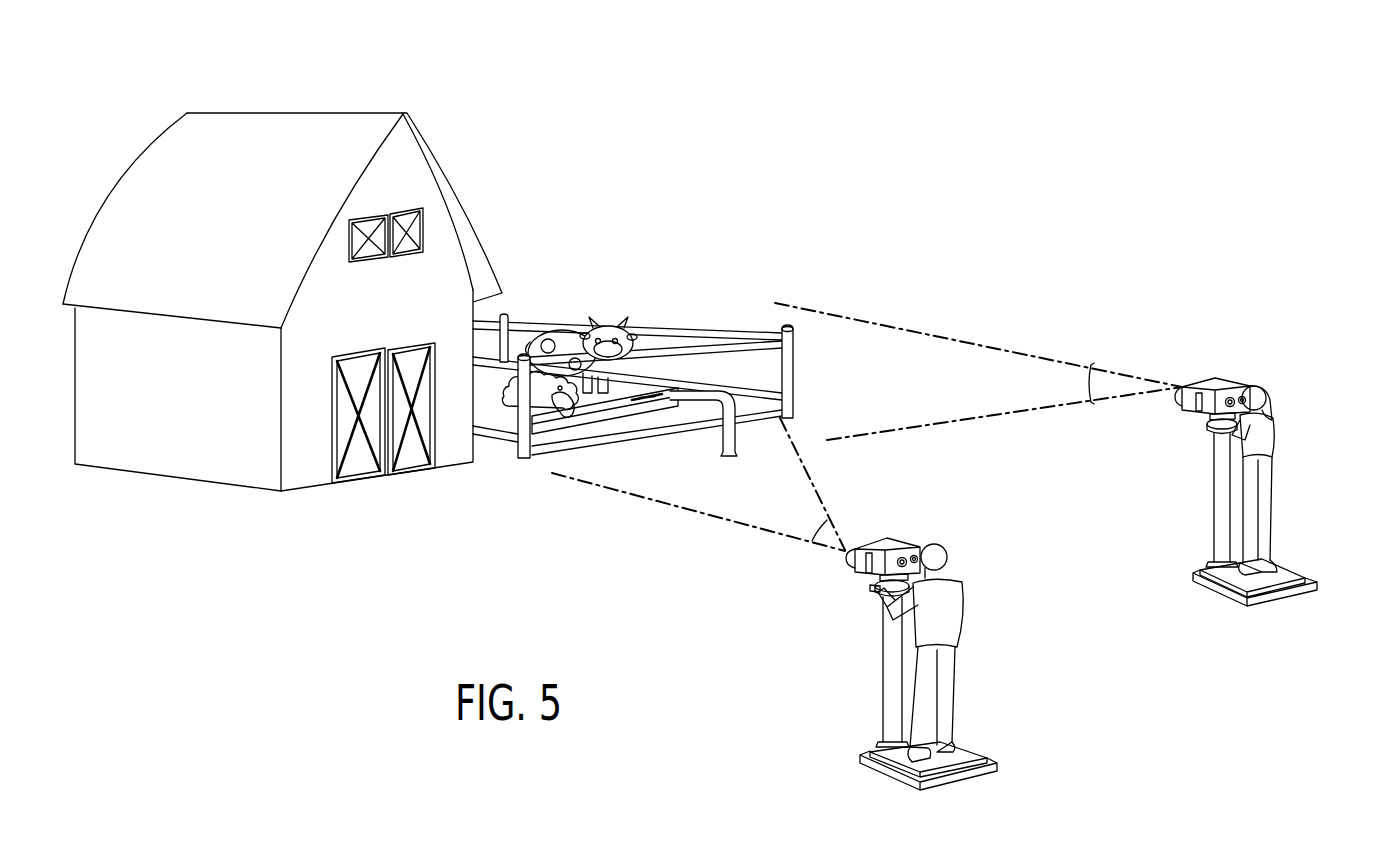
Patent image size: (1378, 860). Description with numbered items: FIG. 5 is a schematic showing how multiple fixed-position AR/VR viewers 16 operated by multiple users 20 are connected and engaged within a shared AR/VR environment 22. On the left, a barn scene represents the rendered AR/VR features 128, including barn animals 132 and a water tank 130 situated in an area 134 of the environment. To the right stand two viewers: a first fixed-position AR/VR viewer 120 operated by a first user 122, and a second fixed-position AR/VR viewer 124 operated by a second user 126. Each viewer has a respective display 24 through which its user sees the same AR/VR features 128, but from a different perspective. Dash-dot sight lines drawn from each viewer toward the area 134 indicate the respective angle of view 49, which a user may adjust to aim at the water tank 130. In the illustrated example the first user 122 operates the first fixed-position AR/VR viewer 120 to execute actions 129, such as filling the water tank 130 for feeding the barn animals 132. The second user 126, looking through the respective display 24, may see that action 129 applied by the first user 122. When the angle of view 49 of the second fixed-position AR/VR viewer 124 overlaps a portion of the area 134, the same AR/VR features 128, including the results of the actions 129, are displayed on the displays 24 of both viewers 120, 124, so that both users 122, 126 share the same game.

The AR/VR environment 22 is at (112, 98).
The AR/VR features 128 is at (633, 332).
The barn animals 132 is at (600, 303).
The area 134 is at (709, 306).
The water tank 130 is at (578, 444).
The actions 129 is at (718, 434).
The angle of view 49 is at (816, 532).
The fixed-position AR/VR viewers 16 is at (1081, 536).
The first fixed-position AR/VR viewer 120 is at (898, 500).
The second fixed-position AR/VR viewer 124 is at (1254, 332).
The displays 24 is at (911, 549).
The users 20 is at (1120, 550).
The first user 122 is at (1014, 632).
The second user 126 is at (1302, 410).